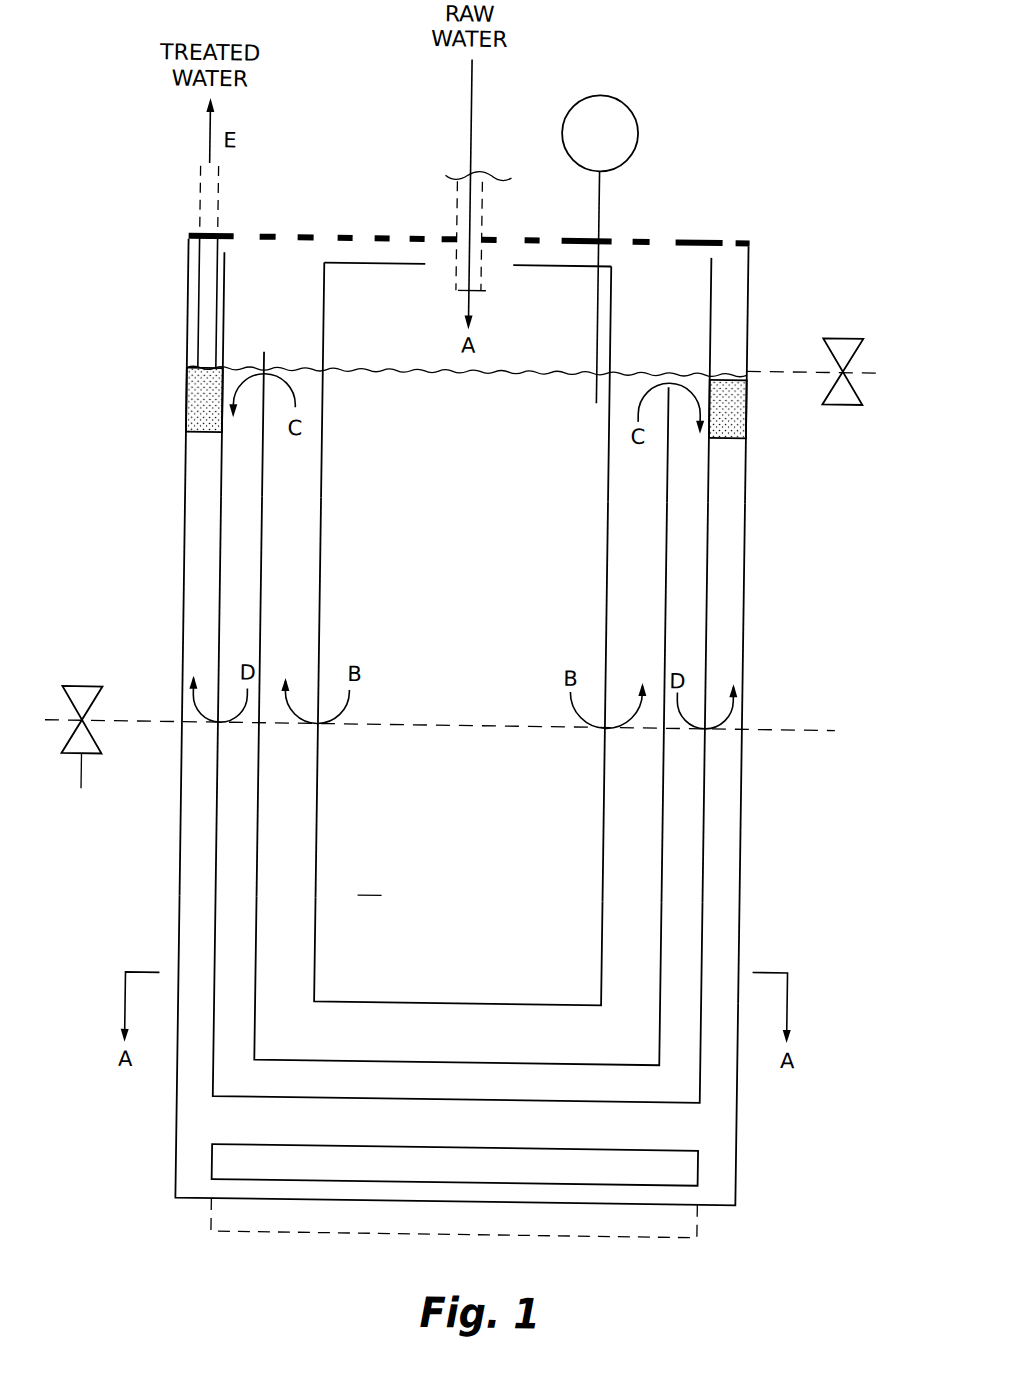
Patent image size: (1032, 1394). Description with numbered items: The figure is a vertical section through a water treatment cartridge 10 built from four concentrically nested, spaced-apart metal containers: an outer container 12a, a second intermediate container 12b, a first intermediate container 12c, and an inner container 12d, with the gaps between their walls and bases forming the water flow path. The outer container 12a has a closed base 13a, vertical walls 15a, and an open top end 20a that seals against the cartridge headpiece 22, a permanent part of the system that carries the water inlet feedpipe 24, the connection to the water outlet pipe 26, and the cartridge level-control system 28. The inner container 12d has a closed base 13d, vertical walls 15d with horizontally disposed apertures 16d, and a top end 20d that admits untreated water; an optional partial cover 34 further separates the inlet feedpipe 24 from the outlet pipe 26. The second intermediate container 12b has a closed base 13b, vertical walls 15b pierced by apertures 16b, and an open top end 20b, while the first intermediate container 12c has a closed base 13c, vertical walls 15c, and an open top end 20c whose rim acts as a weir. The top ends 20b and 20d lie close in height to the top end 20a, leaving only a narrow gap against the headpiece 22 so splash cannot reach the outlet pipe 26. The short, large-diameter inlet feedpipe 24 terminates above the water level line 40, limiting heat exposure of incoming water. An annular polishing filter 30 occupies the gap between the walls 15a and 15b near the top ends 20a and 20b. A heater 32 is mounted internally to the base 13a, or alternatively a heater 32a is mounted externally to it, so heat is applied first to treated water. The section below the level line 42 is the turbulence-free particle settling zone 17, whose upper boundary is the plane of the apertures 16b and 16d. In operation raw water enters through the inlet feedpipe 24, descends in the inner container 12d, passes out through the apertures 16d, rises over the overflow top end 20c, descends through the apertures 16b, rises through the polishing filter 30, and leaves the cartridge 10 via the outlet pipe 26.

The cartridge 10 is at (842, 785).
The outer container 12a is at (744, 869).
The second intermediate container 12b is at (707, 890).
The first intermediate container 12c is at (665, 788).
The inner container 12d is at (607, 857).
The closed base of outer container 13a is at (203, 1203).
The closed base of second intermediate container 13b is at (233, 1101).
The closed base of first intermediate container 13c is at (307, 1063).
The closed base of inner container 13d is at (346, 1005).
The vertical walls of outer container 15a is at (183, 489).
The vertical walls of second intermediate container 15b is at (218, 446).
The vertical walls of first intermediate container 15c is at (260, 526).
The vertical walls of inner container 15d is at (319, 457).
The apertures 16b is at (220, 726).
The apertures 16d is at (317, 725).
The particle settling zone 17 is at (370, 882).
The open top end of outer container 20a is at (744, 264).
The open top end of second intermediate container 20b is at (220, 255).
The open top end of first intermediate container 20c is at (260, 357).
The top end of inner container 20d is at (322, 270).
The cartridge headpiece 22 is at (681, 236).
The water inlet feedpipe 24 is at (450, 284).
The water outlet pipe 26 is at (199, 281).
The cartridge level-control system 28 is at (630, 123).
The polishing filter 30 is at (183, 382).
The heater 32 is at (669, 1160).
The heater 32a is at (634, 1238).
The partial cover 34 is at (327, 262).
The water level line 40 is at (853, 353).
The level line 42 is at (440, 758).